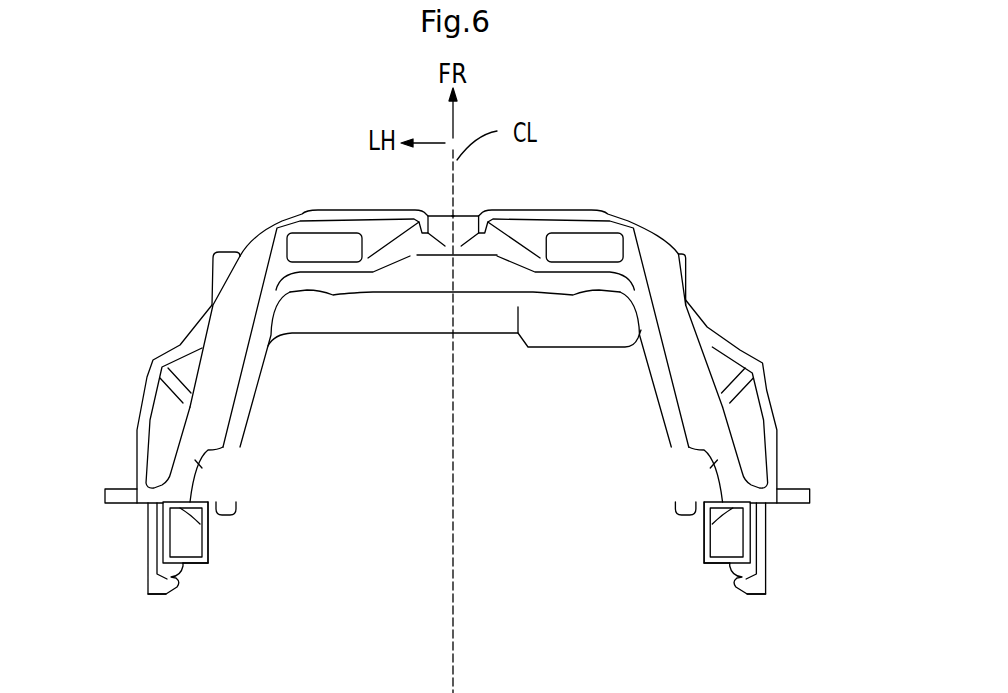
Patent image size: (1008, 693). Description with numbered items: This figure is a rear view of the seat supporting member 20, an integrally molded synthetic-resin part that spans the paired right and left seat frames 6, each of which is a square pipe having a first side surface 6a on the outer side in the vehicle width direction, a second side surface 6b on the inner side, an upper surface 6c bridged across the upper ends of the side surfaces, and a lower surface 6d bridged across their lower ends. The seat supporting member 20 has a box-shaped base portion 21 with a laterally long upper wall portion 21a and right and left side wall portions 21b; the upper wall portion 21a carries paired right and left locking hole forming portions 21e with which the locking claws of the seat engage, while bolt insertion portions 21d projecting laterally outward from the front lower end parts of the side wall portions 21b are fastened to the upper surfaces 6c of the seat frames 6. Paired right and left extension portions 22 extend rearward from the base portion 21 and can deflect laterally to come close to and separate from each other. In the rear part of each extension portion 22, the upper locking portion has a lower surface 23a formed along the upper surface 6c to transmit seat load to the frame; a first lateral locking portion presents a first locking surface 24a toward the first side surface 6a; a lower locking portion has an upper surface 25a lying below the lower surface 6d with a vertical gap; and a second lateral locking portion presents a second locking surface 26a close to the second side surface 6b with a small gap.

The seat supporting member 20 is at (722, 150).
The base portion 21 is at (577, 200).
The upper wall portion 21a is at (512, 210).
The side wall portion 21b is at (230, 290).
The bolt insertion portion 21d is at (120, 487).
The locking hole forming portion 21e is at (322, 230).
The extension portion 22 is at (170, 426).
The lower surface of upper locking portion 23a is at (207, 530).
The first locking surface 24a is at (177, 533).
The upper surface of lower locking portion 25a is at (180, 580).
The second locking surface 26a is at (203, 497).
The seat frame 6 is at (216, 569).
The first side surface 6a is at (148, 550).
The second side surface 6b is at (212, 538).
The upper surface 6c is at (240, 467).
The lower surface 6d is at (190, 565).